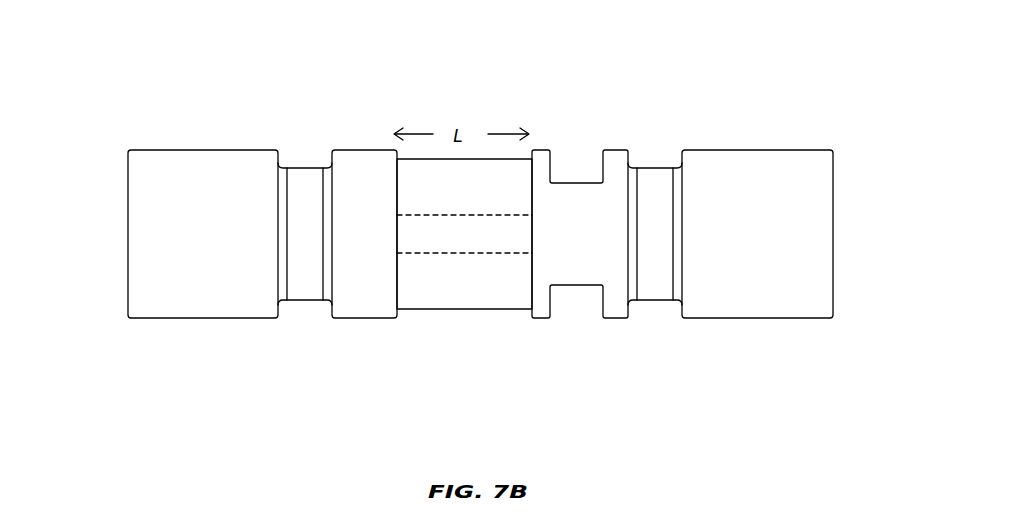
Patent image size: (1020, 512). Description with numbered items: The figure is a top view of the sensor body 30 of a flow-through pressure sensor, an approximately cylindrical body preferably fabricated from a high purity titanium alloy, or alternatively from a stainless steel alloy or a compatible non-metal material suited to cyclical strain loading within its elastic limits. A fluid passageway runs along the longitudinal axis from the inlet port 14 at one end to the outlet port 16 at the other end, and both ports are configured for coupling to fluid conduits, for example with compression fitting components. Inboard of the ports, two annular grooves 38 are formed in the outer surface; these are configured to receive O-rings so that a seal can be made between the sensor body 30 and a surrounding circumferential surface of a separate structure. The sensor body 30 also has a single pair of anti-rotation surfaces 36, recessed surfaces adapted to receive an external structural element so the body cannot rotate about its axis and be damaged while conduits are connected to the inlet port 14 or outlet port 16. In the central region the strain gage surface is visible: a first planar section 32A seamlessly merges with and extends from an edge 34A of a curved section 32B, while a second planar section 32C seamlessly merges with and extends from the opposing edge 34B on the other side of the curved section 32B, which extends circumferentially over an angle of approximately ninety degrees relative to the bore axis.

The inlet port 14 is at (858, 222).
The outlet port 16 is at (108, 217).
The sensor body 30 is at (641, 103).
The first planar section 32A is at (433, 295).
The curved section 32B is at (452, 230).
The second planar section 32C is at (448, 167).
The edge of curved section 34A is at (477, 254).
The opposing edge of curved section 34B is at (477, 214).
The anti-rotation surfaces 36 is at (582, 182).
The annular grooves 38 is at (305, 165).